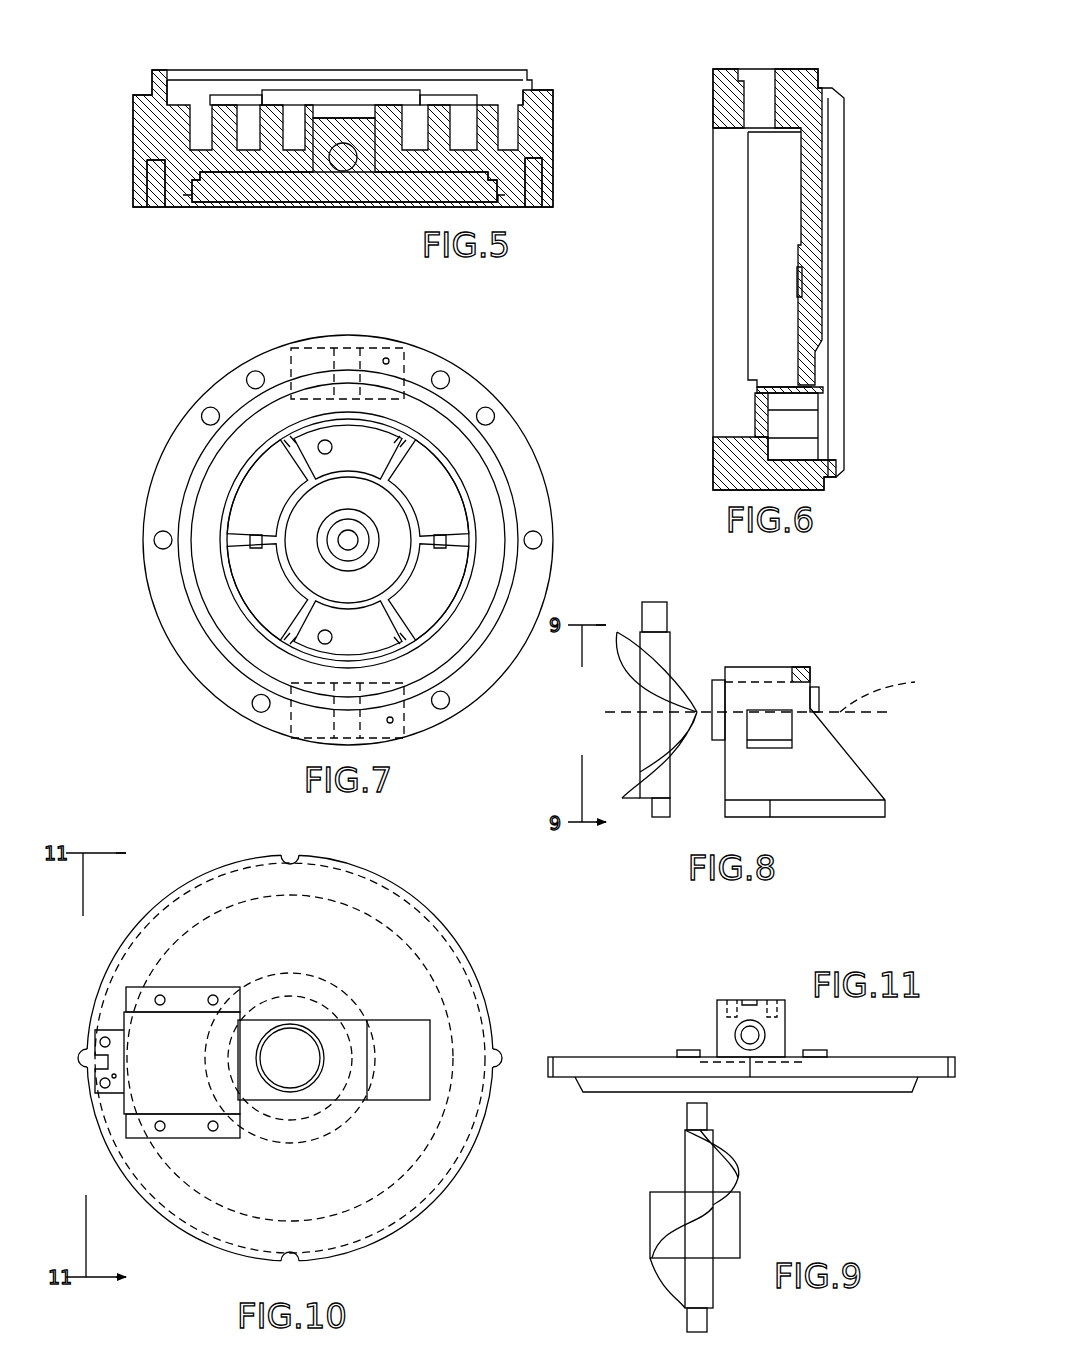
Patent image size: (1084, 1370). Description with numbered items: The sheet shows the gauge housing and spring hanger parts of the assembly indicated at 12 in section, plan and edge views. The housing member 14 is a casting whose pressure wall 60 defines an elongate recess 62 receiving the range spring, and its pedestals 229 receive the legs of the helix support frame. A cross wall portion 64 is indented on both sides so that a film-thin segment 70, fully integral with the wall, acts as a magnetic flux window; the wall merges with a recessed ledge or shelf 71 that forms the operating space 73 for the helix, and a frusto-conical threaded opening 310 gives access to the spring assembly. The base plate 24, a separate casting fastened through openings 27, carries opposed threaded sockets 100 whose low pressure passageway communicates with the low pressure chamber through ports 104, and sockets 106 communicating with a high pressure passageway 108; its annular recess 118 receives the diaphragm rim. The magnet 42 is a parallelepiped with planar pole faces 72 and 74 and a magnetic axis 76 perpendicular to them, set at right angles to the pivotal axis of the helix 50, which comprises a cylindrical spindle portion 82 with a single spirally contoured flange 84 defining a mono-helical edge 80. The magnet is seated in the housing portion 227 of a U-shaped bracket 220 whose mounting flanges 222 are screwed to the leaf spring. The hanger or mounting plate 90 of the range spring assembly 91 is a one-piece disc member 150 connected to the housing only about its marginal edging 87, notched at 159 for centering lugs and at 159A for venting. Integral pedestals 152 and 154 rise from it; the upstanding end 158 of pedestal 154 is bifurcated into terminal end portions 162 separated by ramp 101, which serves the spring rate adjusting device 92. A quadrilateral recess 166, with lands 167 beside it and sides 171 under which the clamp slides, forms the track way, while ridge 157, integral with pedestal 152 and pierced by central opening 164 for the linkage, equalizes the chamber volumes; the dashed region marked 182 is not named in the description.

In FIG. 5, the housing assembly 12 is at (580, 100).
In FIG. 6, the housing assembly 12 is at (866, 70).
In FIG. 5, the housing member 14 is at (565, 136).
In FIG. 6, the housing member 14 is at (804, 69).
In FIG. 7, the base plate 24 is at (522, 396).
In FIG. 7, the openings 27 is at (446, 380).
In FIG. 8, the magnet 42 is at (715, 676).
In FIG. 9, the magnet 42 is at (693, 1217).
In FIG. 8, the helix 50 is at (646, 722).
In FIG. 5, the pressure wall 60 is at (382, 96).
In FIG. 6, the pressure wall 60 is at (774, 283).
In FIG. 5, the elongate chamber portion or recess 62 is at (366, 152).
In FIG. 6, the elongate chamber portion or recess 62 is at (762, 330).
In FIG. 6, the cross wall portion 64 is at (800, 388).
In FIG. 6, the pressure wall segment 70 is at (790, 403).
In FIG. 6, the recessed ledge or shelf 71 is at (790, 424).
In FIG. 8, the pole face 72 is at (710, 735).
In FIG. 9, the pole face 72 is at (665, 1212).
In FIG. 6, the operating space 73 is at (812, 452).
In FIG. 8, the pole face 74 is at (816, 690).
In FIG. 8, the magnetic axis 76 is at (887, 690).
In FIG. 8, the mono-helical edge 80 is at (632, 660).
In FIG. 9, the mono-helical edge 80 is at (733, 1160).
In FIG. 8, the cylindrical spindle portion 82 is at (653, 738).
In FIG. 9, the cylindrical spindle portion 82 is at (705, 1278).
In FIG. 8, the spirally contoured flange or lobe 84 is at (633, 640).
In FIG. 9, the spirally contoured flange or lobe 84 is at (725, 1175).
In FIG. 11, the marginal edging 87 is at (905, 1062).
In FIG. 10, the marginal edging 87 is at (302, 1056).
In FIG. 11, the hanger or mounting plate 90 is at (905, 1082).
In FIG. 10, the hanger or mounting plate 90 is at (468, 1003).
In FIG. 11, the range spring assembly 91 is at (747, 972).
In FIG. 10, the range spring assembly 91 is at (490, 933).
In FIG. 11, the spring rate adjusting device 92 is at (756, 990).
In FIG. 7, the threaded sockets 100 is at (302, 356).
In FIG. 11, the ramp 101 is at (750, 1000).
In FIG. 7, the ports 104 is at (332, 447).
In FIG. 7, the threaded sockets 106 is at (372, 352).
In FIG. 7, the high pressure passageway 108 is at (389, 360).
In FIG. 7, the annular recess 118 is at (503, 473).
In FIG. 11, the disc member 150 is at (612, 1057).
In FIG. 10, the pedestal 152 is at (345, 1030).
In FIG. 11, the pedestal 154 is at (783, 1030).
In FIG. 10, the pedestal 154 is at (106, 1095).
In FIG. 10, the ridge 157 is at (355, 1100).
In FIG. 11, the upstanding end 158 is at (718, 1017).
In FIG. 10, the notches 159 is at (282, 853).
In FIG. 10, the notches 159A is at (85, 1055).
In FIG. 11, the terminal end portions 162 is at (722, 1000).
In FIG. 10, the central opening 164 is at (312, 1060).
In FIG. 10, the quadrilateral recess 166 is at (183, 1022).
In FIG. 10, the lands 167 is at (206, 992).
In FIG. 10, the sides 171 is at (160, 1005).
In FIG. 10, the dashed circle region 182 is at (220, 1040).
In FIG. 8, the bracket 220 is at (800, 667).
In FIG. 8, the mounting flanges 222 is at (862, 808).
In FIG. 8, the magnet housing portion 227 is at (752, 690).
In FIG. 5, the housing member pedestals 229 is at (236, 95).
In FIG. 6, the internally threaded opening 310 is at (746, 128).